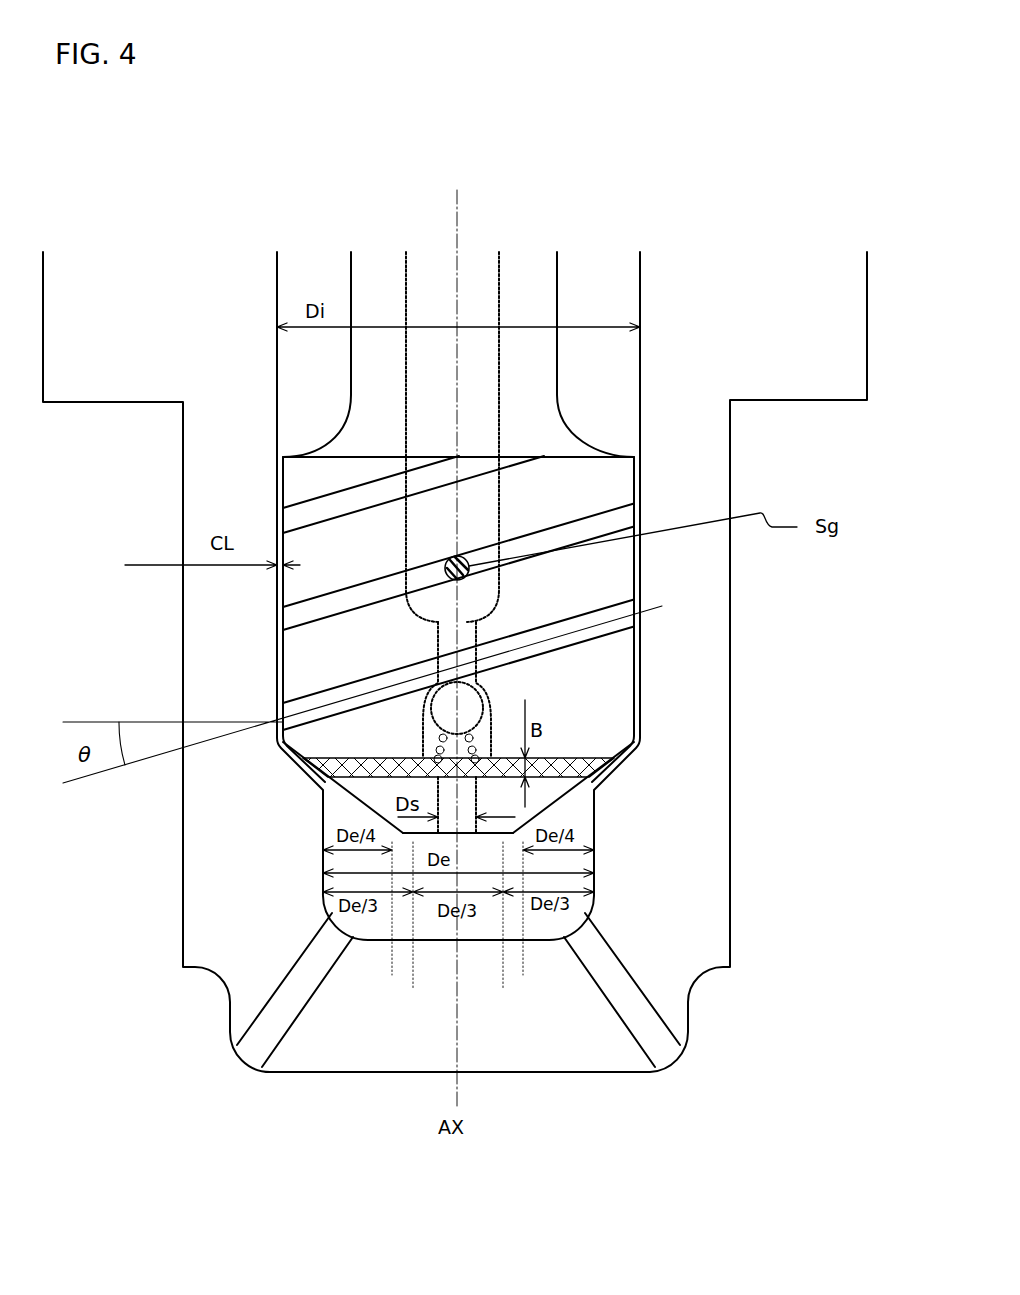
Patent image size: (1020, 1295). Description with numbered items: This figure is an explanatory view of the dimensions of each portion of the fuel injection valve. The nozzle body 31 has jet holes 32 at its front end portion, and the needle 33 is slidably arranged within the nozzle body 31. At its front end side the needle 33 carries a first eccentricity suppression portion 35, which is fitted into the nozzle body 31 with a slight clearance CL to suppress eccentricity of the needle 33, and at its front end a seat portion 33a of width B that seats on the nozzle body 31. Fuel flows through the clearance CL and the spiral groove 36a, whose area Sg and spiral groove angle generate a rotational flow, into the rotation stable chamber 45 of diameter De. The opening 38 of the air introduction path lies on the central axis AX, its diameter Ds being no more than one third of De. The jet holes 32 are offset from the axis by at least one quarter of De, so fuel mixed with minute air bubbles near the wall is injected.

The nozzle body 31 is at (731, 620).
The jet hole 32 is at (260, 1063).
The needle 33 is at (557, 268).
The seat portion 33a is at (578, 757).
The first eccentricity suppression portion 35 is at (640, 452).
The spiral groove 36a is at (294, 617).
The opening 38 is at (472, 836).
The rotation stable chamber 45 is at (581, 798).